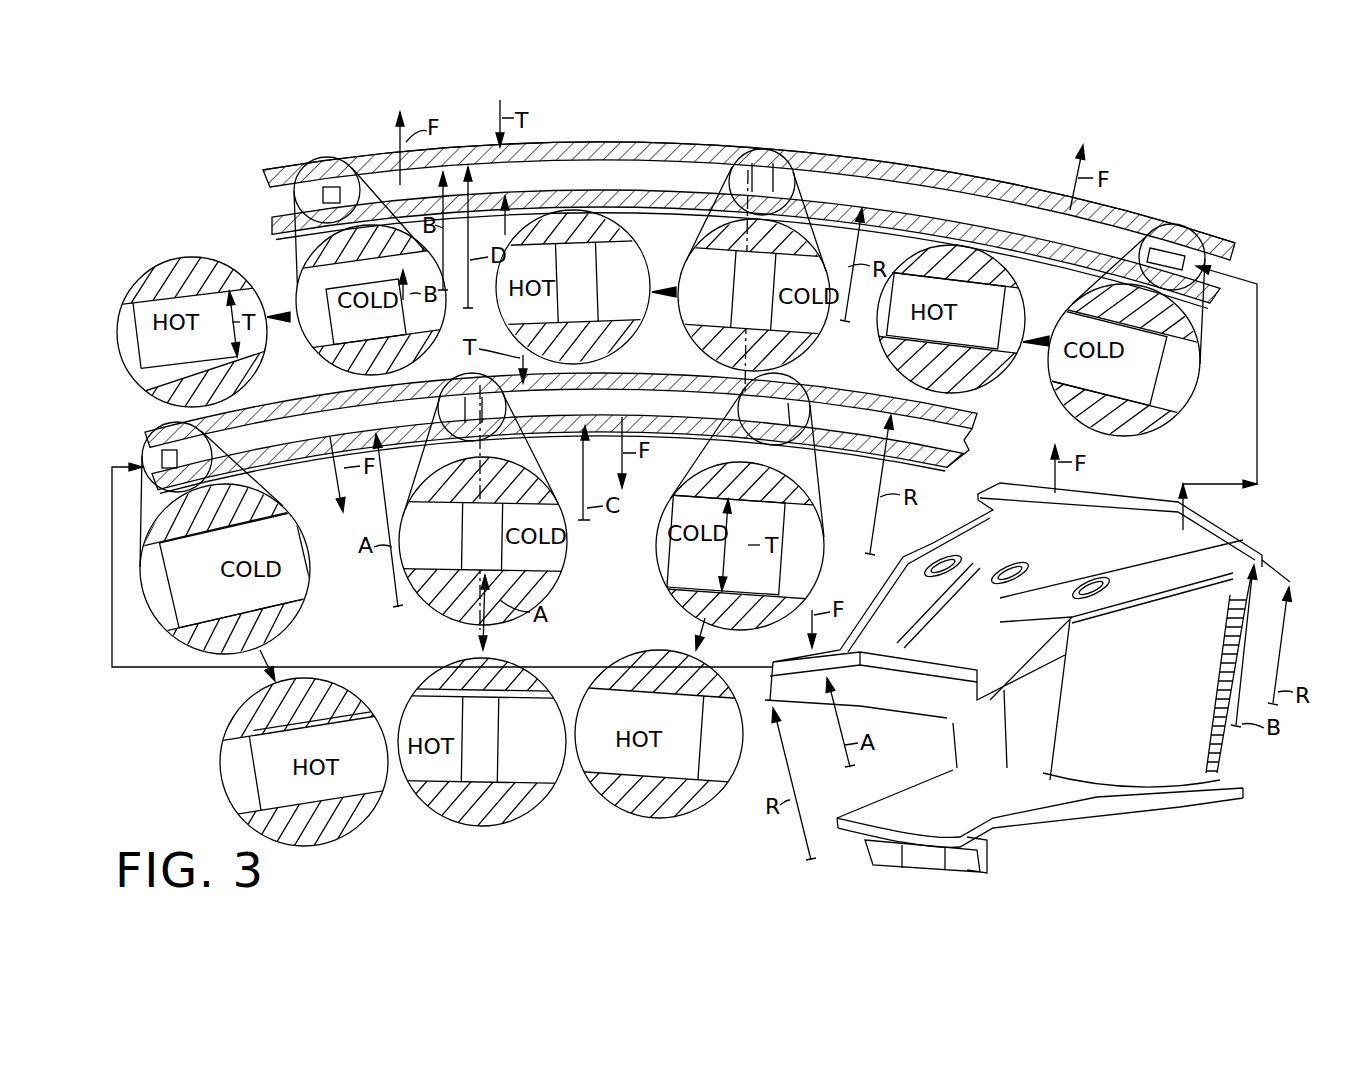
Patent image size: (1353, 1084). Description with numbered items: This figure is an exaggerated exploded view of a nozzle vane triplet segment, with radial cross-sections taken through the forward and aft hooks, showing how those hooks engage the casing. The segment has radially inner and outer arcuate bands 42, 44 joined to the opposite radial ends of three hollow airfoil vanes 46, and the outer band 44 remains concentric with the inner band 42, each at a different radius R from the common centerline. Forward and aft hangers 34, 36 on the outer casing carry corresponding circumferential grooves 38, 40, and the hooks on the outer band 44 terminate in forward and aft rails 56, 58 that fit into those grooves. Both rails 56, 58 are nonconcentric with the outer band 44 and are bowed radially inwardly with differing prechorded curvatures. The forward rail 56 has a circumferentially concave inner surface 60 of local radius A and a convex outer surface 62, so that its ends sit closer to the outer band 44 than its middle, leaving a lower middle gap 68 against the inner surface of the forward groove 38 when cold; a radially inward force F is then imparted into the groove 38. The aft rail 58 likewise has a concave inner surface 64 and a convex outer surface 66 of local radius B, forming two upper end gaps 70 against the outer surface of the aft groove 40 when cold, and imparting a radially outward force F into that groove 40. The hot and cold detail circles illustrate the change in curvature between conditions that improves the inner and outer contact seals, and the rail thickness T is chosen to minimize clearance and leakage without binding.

The forward hanger 34 is at (582, 491).
The aft hanger 36 is at (853, 152).
The forward groove 38 is at (940, 444).
The aft groove 40 is at (711, 262).
The inner band 42 is at (1050, 818).
The outer band 44 is at (972, 524).
The airfoil vanes 46 is at (1163, 677).
The forward rail 56 is at (483, 504).
The aft rail 58 is at (723, 288).
The concave inner surface of forward rail 60 is at (287, 452).
The convex outer surface of forward rail 62 is at (268, 405).
The concave inner surface of aft rail 64 is at (1092, 263).
The convex outer surface of aft rail 66 is at (1133, 213).
The lower middle gap 68 is at (481, 537).
The upper end gaps 70 is at (311, 300).